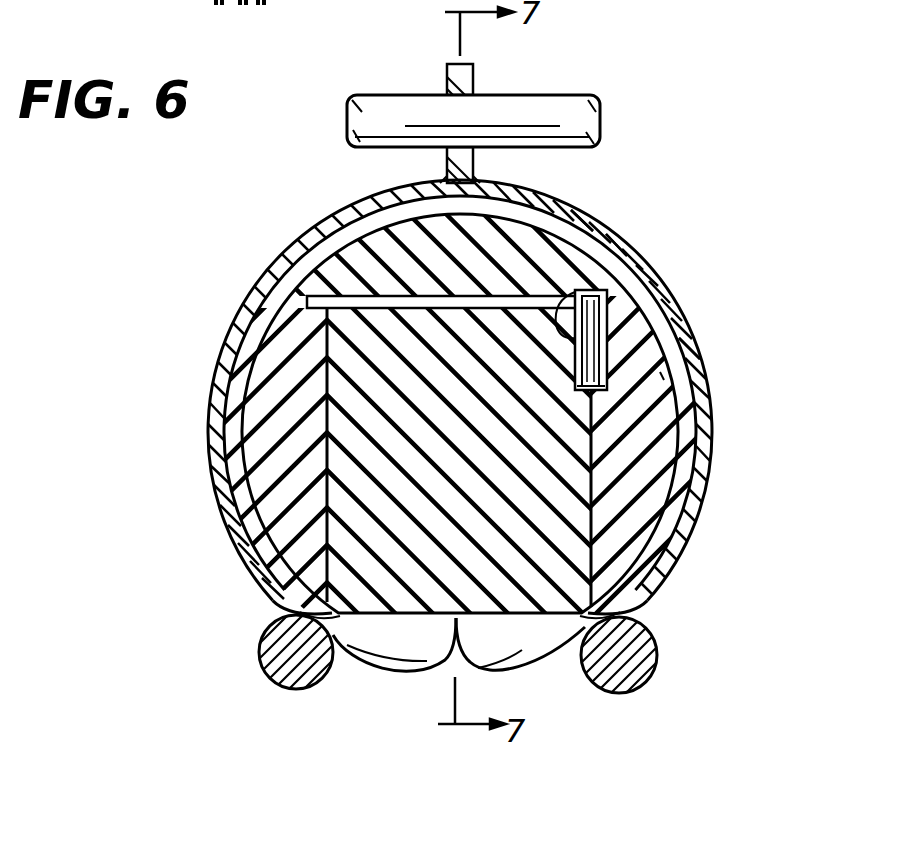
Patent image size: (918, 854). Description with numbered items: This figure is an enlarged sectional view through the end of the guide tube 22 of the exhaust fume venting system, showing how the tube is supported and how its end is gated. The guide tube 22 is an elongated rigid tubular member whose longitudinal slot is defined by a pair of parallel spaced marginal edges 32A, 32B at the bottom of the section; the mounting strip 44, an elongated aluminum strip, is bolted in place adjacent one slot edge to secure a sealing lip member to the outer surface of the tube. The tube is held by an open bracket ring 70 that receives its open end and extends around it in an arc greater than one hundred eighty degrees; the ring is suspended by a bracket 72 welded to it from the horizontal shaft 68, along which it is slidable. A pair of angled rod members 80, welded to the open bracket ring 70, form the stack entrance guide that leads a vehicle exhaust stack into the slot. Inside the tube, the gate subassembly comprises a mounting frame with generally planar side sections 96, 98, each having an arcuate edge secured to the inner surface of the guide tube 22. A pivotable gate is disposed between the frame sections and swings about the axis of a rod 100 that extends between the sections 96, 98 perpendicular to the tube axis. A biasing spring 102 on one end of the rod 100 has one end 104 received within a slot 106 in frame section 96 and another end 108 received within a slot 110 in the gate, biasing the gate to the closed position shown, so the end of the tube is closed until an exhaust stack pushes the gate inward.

The guide tube 22 is at (655, 292).
The mounting strip 44 is at (578, 483).
The horizontal shaft 68 is at (584, 103).
The open bracket ring 70 is at (603, 232).
The bracket 72 is at (478, 74).
The angled rod members 80 is at (266, 673).
The frame side section 96 is at (640, 358).
The frame side section 98 is at (262, 390).
The rod 100 is at (348, 296).
The biasing spring 102 is at (633, 262).
The spring end 104 is at (652, 356).
The slot 106 is at (605, 392).
The spring end 108 is at (562, 286).
The slot 110 is at (610, 378).
The marginal edge of slot 32A is at (635, 620).
The marginal edge of slot 32B is at (297, 593).